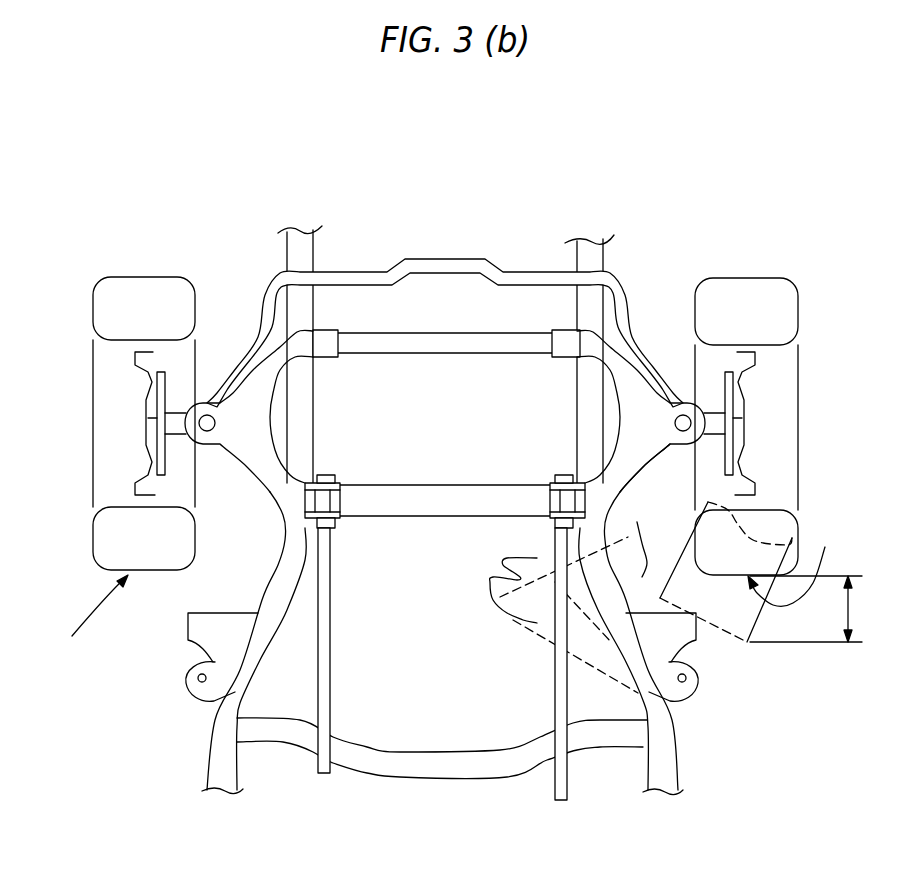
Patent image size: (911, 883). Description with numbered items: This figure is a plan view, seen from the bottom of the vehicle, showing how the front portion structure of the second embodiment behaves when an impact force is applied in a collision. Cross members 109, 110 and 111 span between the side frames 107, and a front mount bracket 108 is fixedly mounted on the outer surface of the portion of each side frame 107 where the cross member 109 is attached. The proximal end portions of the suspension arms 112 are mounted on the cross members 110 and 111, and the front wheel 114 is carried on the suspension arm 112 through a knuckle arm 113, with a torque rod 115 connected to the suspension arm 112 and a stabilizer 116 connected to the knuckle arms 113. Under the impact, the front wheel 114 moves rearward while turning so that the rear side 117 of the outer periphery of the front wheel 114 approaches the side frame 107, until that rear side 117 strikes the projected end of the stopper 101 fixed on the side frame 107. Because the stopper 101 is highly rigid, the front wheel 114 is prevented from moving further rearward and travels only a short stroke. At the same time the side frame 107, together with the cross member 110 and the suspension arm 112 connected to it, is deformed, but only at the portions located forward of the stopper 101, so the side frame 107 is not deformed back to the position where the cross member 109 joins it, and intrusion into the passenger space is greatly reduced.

The stopper 101 is at (183, 625).
The side frame 107 is at (220, 742).
The front mount bracket 108 is at (197, 690).
The cross member 109 is at (423, 760).
The cross member 110 is at (412, 517).
The cross member 111 is at (462, 345).
The suspension arm 112 is at (260, 445).
The knuckle arm 113 is at (173, 423).
The front wheel 114 is at (110, 540).
The torque rod 115 is at (331, 657).
The stabilizer 116 is at (458, 266).
The rear side of the outer periphery of the front wheel 117 is at (452, 582).